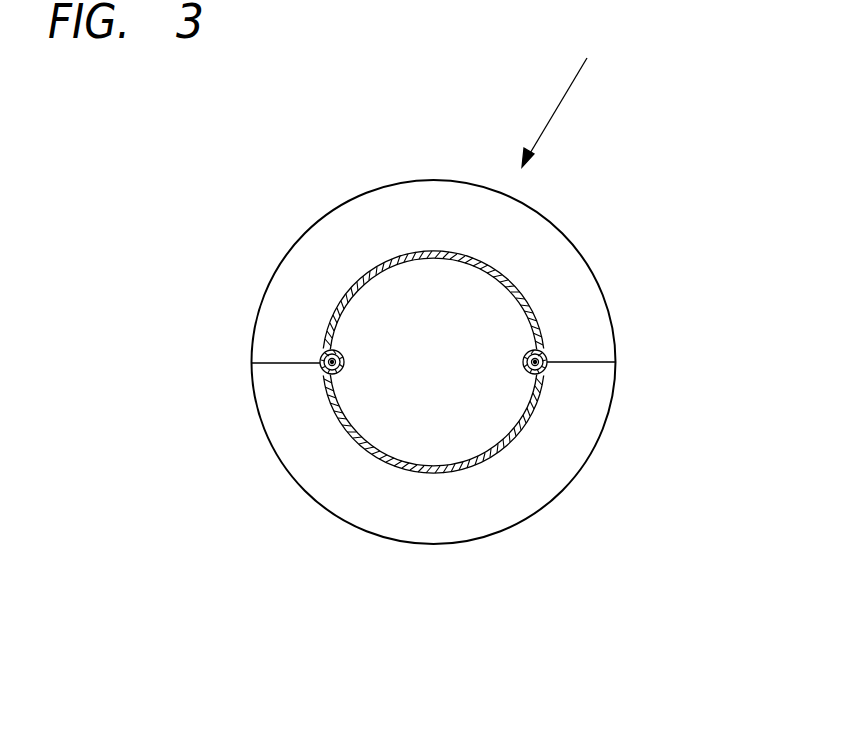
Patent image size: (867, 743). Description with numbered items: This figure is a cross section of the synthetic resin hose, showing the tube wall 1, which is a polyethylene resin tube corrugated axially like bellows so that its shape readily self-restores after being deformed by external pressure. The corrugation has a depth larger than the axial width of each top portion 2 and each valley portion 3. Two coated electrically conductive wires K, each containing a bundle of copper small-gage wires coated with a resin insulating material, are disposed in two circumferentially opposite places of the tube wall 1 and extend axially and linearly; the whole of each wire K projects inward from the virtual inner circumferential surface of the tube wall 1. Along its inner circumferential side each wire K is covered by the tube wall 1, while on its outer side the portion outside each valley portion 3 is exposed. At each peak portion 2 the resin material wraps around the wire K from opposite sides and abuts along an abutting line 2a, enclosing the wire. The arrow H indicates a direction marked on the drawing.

The tube wall 1 is at (467, 62).
The top portion 2 is at (383, 200).
The valley portion 3 is at (442, 250).
The abutting line 2a is at (263, 361).
The coated electrically conductive wire K is at (326, 367).
The direction arrow H is at (561, 90).